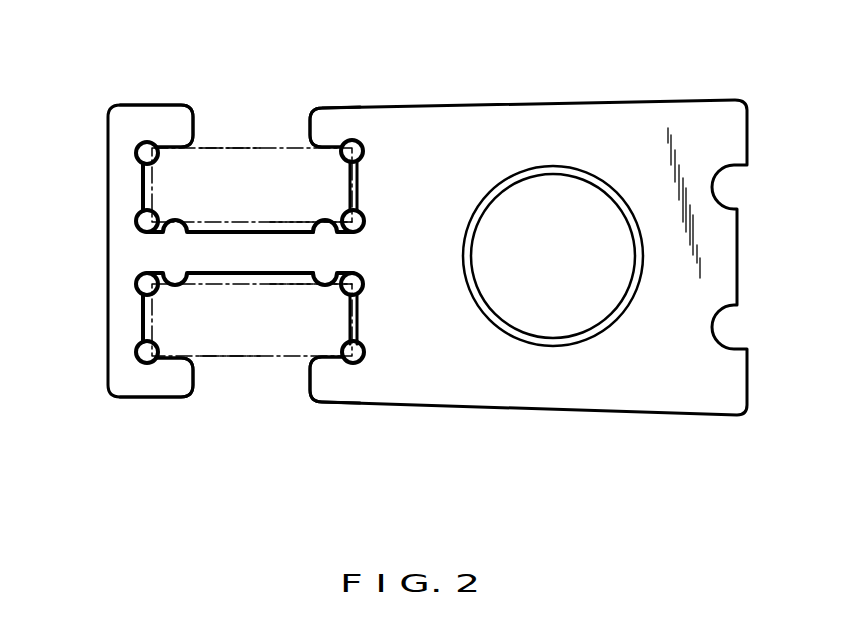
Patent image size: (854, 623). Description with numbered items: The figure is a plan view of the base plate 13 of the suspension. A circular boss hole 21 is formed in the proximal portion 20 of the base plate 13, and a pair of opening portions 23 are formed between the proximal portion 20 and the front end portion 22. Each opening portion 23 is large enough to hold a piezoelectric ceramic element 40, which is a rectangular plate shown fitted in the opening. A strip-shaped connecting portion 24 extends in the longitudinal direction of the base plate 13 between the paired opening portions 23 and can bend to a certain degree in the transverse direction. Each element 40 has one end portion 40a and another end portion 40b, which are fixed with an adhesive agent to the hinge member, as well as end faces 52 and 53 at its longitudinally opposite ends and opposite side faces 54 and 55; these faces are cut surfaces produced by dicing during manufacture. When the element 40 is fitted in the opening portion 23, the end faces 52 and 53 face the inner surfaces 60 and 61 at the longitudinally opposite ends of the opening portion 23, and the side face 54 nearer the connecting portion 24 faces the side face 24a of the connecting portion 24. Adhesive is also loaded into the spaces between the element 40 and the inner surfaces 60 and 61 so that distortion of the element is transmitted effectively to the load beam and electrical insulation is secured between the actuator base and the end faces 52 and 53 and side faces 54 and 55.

The base plate 13 is at (672, 96).
The proximal portion 20 is at (499, 125).
The circular boss hole 21 is at (576, 166).
The front end portion 22 is at (118, 247).
The opening portion 23 is at (264, 178).
The connecting portion 24 is at (197, 248).
The side face of connecting portion 24a is at (285, 229).
The piezoelectric ceramic element 40 is at (293, 170).
The one end portion of element 40a is at (343, 172).
The other end portion of element 40b is at (142, 198).
The end face 52 is at (372, 213).
The end face 53 is at (142, 205).
The side face 54 is at (257, 266).
The side face 55 is at (238, 147).
The inner surface of opening portion 60 is at (333, 120).
The inner surface of opening portion 61 is at (153, 158).